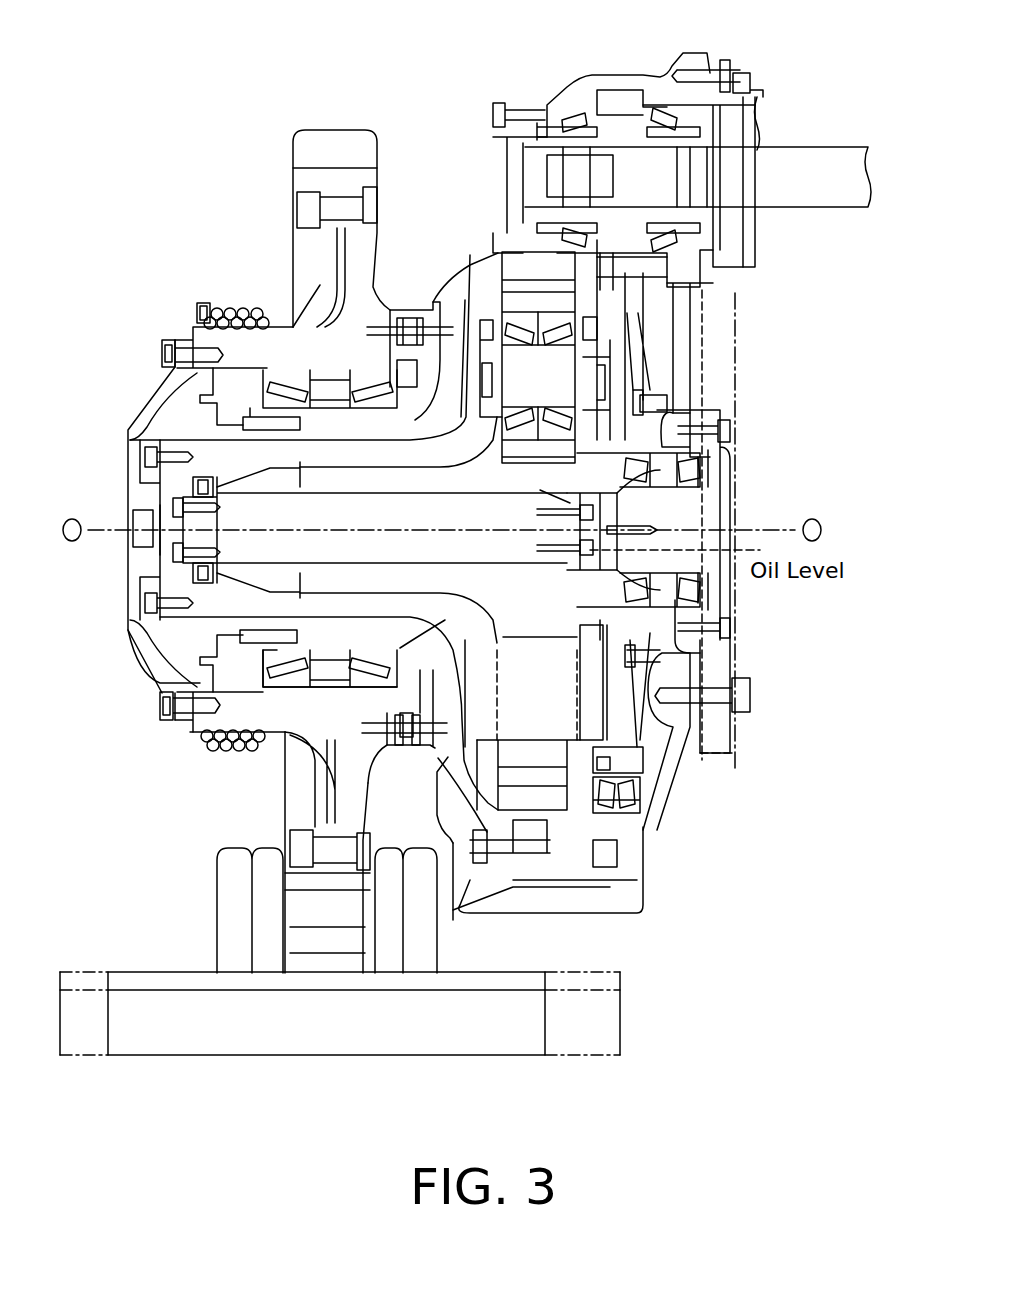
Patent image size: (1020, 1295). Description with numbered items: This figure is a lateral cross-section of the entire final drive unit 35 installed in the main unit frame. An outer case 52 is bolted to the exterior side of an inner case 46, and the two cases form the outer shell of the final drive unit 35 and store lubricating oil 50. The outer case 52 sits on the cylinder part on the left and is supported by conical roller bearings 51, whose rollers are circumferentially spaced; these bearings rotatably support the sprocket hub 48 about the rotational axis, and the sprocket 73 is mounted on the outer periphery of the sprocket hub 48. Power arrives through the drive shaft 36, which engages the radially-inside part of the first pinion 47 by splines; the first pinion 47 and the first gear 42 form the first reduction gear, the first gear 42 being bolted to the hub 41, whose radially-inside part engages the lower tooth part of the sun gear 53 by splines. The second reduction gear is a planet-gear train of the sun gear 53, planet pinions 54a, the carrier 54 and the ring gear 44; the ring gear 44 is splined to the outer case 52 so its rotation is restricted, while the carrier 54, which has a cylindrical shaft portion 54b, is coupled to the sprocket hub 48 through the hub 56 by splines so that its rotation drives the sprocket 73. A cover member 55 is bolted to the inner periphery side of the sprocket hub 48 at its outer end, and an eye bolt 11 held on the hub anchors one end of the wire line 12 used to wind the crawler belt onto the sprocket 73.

The final drive unit 35 is at (186, 117).
The sprocket 73 is at (305, 148).
The wire line 12 is at (232, 302).
The eye bolt 11 is at (200, 302).
The sprocket hub 48 is at (288, 335).
The conical roller bearings 51 is at (370, 387).
The carrier 54 is at (128, 432).
The planet pinions 54a is at (618, 308).
The cylindrical shaft portion 54b is at (162, 487).
The cover member 55 is at (130, 590).
The hub 56 is at (195, 635).
The lubricating oil 50 is at (377, 553).
The ring gear 44 is at (520, 262).
The sun gear 53 is at (610, 513).
The inner case 46 is at (722, 470).
The hub 41 is at (648, 358).
The first gear 42 is at (618, 265).
The first pinion 47 is at (622, 110).
The drive shaft 36 is at (810, 160).
The outer case 52 is at (463, 814).